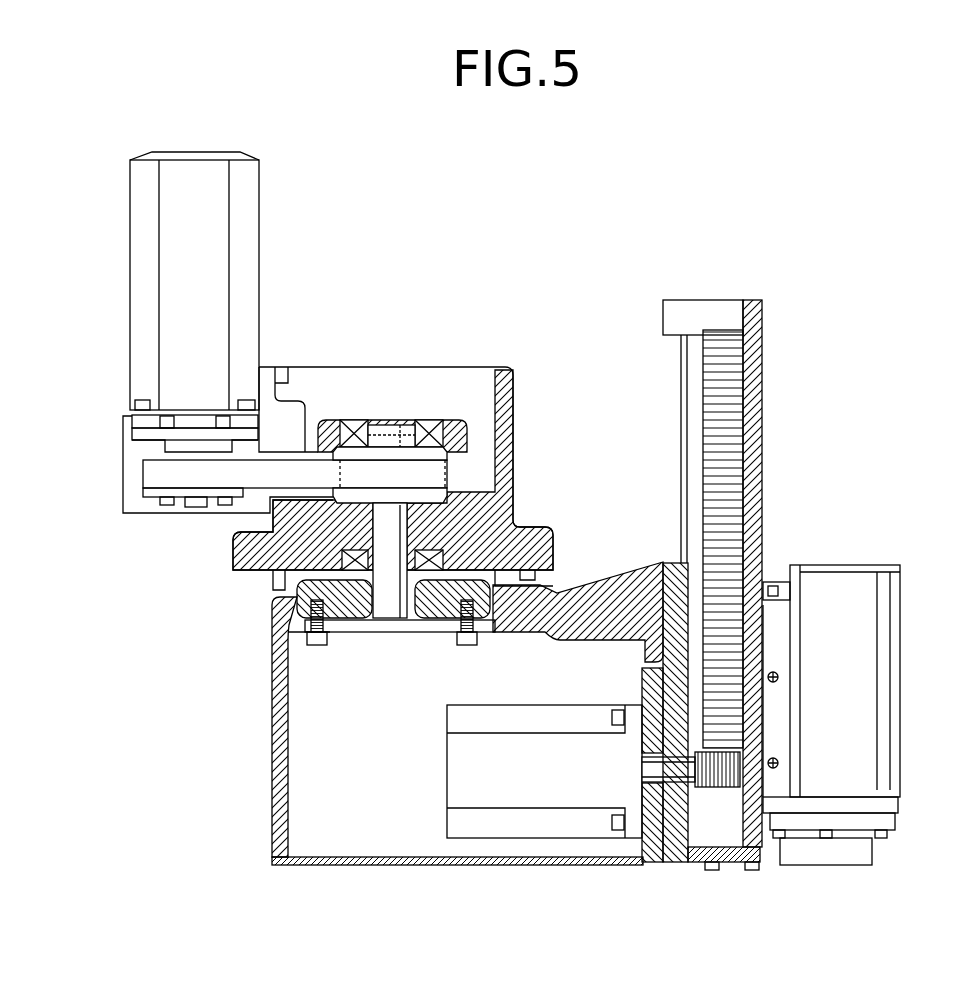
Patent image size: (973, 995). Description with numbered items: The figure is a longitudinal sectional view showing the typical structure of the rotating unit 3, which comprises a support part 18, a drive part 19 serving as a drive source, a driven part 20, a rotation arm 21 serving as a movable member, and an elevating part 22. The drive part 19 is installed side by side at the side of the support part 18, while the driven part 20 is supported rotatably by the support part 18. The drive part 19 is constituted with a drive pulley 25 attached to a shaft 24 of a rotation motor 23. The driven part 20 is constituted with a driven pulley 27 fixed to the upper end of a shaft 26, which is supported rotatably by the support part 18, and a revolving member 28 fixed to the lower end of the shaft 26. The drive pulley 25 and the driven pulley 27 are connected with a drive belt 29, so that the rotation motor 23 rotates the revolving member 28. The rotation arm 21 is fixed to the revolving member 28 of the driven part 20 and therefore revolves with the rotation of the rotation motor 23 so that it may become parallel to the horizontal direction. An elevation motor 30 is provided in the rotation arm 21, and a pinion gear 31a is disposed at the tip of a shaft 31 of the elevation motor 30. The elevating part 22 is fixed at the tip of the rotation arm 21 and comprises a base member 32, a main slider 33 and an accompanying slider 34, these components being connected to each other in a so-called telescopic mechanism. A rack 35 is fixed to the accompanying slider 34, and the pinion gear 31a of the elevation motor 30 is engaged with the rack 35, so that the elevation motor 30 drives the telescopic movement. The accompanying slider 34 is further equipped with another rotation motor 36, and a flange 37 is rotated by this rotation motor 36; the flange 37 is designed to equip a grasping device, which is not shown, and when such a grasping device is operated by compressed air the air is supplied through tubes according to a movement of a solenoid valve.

The rotating unit 3 is at (576, 284).
The support part 18 is at (513, 397).
The drive part 19 is at (122, 386).
The driven part 20 is at (386, 388).
The rotation arm 21 is at (272, 752).
The elevating part 22 is at (797, 540).
The rotation motor 23 is at (259, 228).
The shaft 24 is at (193, 507).
The drive pulley 25 is at (147, 497).
The shaft 26 is at (402, 432).
The driven pulley 27 is at (447, 495).
The revolving member 28 is at (278, 604).
The drive belt 29 is at (145, 472).
The elevation motor 30 is at (527, 840).
The shaft 31 is at (668, 786).
The pinion gear 31a is at (720, 790).
The base member 32 is at (668, 561).
The main slider 33 is at (699, 300).
The accompanying slider 34 is at (762, 332).
The rack 35 is at (733, 330).
The rotation motor 36 is at (900, 686).
The flange 37 is at (830, 866).